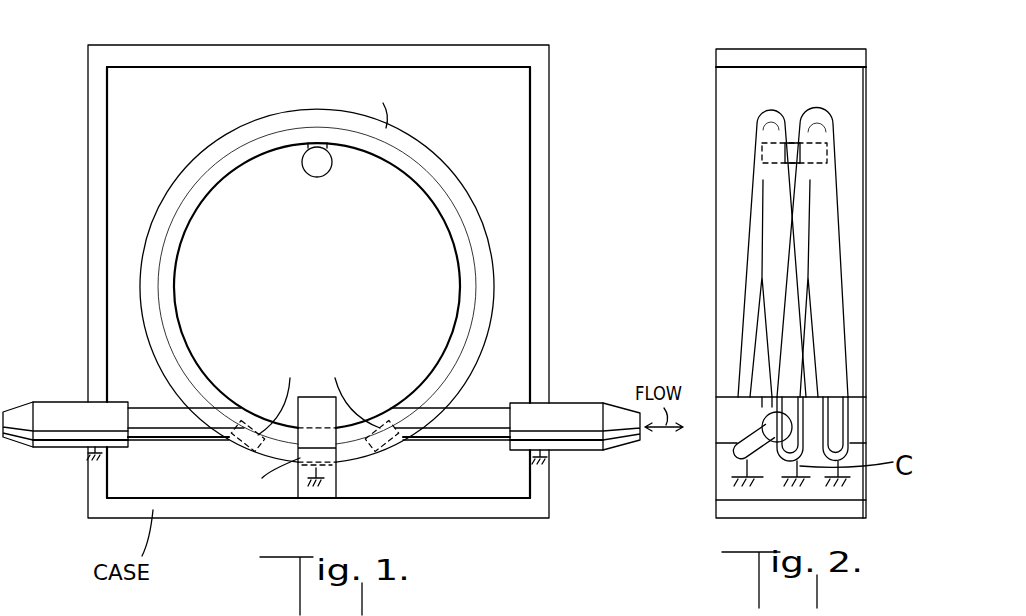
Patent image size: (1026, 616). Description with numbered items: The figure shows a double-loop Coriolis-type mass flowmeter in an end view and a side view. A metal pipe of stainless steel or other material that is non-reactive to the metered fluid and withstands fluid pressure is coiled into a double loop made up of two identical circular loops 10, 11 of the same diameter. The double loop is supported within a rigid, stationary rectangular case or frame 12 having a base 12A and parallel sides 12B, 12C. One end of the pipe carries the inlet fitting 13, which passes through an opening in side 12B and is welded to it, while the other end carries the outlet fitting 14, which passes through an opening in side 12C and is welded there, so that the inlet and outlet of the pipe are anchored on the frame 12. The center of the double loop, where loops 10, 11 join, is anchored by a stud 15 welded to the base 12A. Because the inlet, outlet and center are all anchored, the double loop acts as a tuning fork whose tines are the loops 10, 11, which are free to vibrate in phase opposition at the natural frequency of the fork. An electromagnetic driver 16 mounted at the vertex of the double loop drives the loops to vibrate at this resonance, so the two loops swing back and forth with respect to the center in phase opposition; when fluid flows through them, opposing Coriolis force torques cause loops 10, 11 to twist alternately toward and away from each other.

In FIG. 1, the circular loop 10 is at (440, 175).
In FIG. 2, the circular loop 10 is at (768, 112).
In FIG. 2, the circular loop 11 is at (820, 112).
In FIG. 1, the rectangular case or frame 12 is at (550, 280).
In FIG. 2, the rectangular case or frame 12 is at (864, 64).
In FIG. 1, the base 12A is at (463, 502).
In FIG. 1, the side 12B is at (88, 283).
In FIG. 1, the side 12C is at (550, 148).
In FIG. 1, the inlet fitting 13 is at (62, 408).
In FIG. 1, the outlet fitting 14 is at (515, 410).
In FIG. 1, the stud 15 is at (333, 483).
In FIG. 1, the electromagnetic driver 16 is at (312, 163).
In FIG. 2, the electromagnetic driver 16 is at (794, 153).